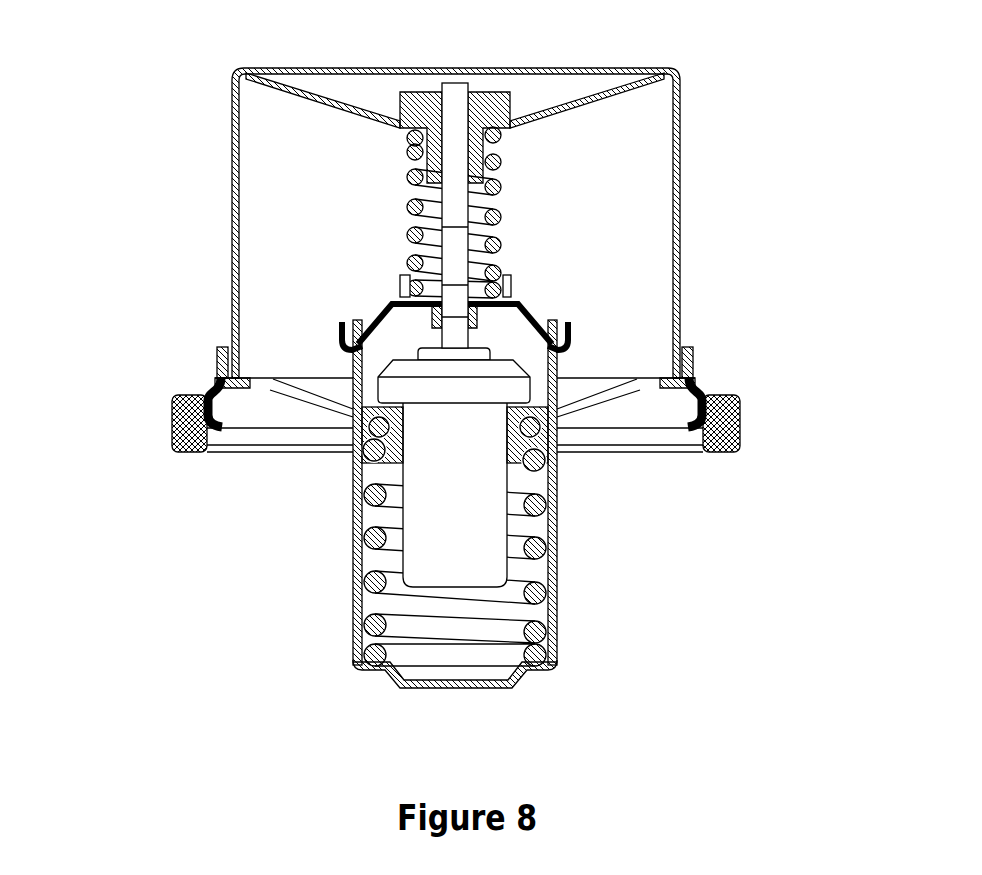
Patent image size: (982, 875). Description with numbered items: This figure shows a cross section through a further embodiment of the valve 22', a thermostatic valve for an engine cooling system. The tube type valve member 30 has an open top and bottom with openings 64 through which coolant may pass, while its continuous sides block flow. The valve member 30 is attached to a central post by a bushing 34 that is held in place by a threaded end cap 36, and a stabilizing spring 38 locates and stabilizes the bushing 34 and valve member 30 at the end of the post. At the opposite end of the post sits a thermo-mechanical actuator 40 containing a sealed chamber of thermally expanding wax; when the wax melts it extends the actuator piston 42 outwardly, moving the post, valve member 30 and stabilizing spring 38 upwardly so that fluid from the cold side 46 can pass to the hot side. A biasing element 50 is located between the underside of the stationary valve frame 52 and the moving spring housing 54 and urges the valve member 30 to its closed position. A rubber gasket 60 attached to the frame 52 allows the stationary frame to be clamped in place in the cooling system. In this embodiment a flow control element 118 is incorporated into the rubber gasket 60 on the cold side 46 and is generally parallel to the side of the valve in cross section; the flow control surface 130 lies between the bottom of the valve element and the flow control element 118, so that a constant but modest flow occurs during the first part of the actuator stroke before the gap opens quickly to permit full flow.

The valve 22' is at (125, 102).
The tube type valve member 30 is at (680, 137).
The bushing 34 is at (500, 98).
The threaded end cap 36 is at (453, 88).
The stabilizing spring 38 is at (503, 215).
The thermo-mechanical actuator 40 is at (476, 525).
The actuator piston 42 is at (456, 333).
The cold side 46 is at (181, 224).
The biasing element 50 is at (550, 665).
The stationary valve frame 52 is at (638, 390).
The moving spring housing 54 is at (557, 620).
The rubber gasket 60 is at (740, 425).
The openings 64 is at (322, 95).
The flow control element 118 is at (215, 357).
The flow control surface 130 is at (670, 362).